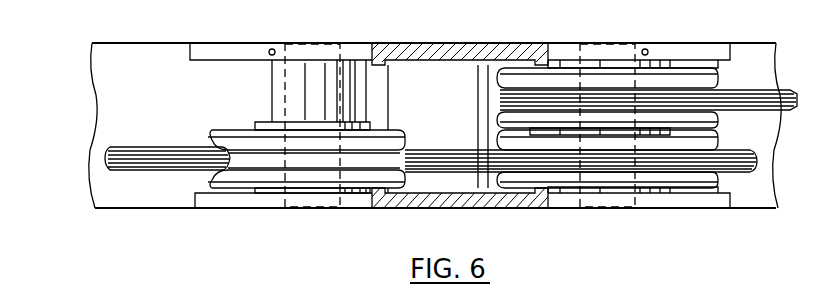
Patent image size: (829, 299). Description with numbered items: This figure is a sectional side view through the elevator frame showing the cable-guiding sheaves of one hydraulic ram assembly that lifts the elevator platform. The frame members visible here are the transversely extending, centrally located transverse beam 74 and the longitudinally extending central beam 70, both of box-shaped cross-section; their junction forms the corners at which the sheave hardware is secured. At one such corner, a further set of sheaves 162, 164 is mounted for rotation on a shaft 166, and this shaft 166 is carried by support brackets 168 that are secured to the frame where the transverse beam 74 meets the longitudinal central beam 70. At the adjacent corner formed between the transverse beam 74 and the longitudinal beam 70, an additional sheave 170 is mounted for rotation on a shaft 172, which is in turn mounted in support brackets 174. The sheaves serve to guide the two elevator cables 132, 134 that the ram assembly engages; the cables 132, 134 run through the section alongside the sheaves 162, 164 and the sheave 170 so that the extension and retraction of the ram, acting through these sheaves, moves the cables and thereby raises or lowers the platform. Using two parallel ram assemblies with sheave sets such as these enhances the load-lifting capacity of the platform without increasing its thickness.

The longitudinal central beam 70 is at (758, 195).
The transverse beam 74 is at (434, 208).
The elevator cable 132 is at (792, 91).
The elevator cable 134 is at (456, 148).
The sheave 162 is at (698, 75).
The sheave 164 is at (703, 182).
The shaft 166 is at (596, 66).
The support bracket 168 is at (670, 56).
The sheave 170 is at (241, 178).
The shaft 172 is at (316, 213).
The support bracket 174 is at (216, 60).